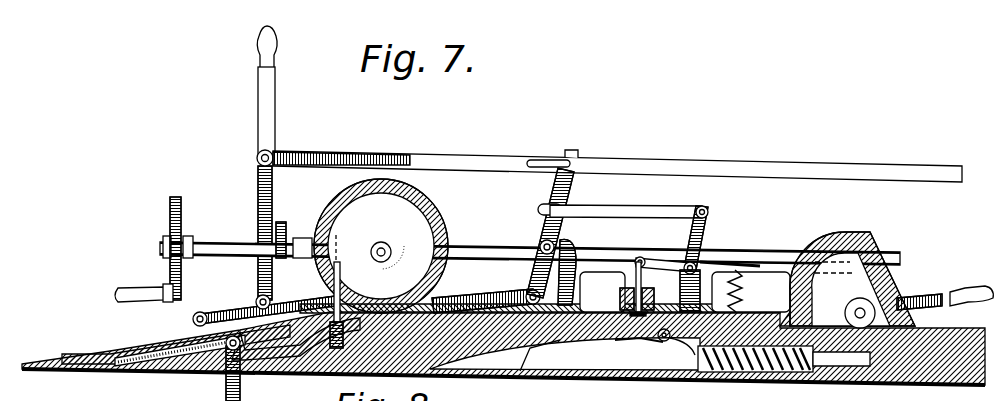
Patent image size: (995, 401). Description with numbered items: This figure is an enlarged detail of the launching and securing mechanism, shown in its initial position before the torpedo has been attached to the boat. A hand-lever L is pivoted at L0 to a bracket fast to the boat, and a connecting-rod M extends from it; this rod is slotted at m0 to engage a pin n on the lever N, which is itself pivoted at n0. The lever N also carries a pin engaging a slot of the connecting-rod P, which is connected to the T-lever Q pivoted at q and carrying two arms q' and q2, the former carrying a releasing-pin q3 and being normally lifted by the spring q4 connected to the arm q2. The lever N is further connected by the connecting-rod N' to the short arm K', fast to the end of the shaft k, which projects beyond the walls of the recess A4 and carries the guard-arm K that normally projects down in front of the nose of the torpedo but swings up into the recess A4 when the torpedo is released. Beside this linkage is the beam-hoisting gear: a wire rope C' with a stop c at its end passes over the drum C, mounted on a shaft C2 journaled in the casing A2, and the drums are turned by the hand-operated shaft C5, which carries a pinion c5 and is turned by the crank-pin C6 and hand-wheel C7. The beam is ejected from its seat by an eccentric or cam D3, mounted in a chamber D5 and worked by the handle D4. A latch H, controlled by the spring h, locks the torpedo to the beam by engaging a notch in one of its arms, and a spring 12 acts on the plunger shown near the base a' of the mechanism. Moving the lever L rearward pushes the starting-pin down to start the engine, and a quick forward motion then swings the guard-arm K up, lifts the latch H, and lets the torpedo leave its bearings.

The hand-lever L is at (275, 122).
The lever pivot L0 is at (256, 300).
The connecting-rod M is at (742, 165).
The slot m0 is at (538, 160).
The pin n is at (560, 165).
The lever N is at (571, 210).
The connecting-rod N' is at (415, 290).
The lever pivot n0 is at (570, 240).
The connecting-rod P is at (622, 218).
The T-lever Q is at (708, 232).
The pivot q is at (712, 268).
The arm q' is at (665, 245).
The arm q2 is at (752, 262).
The releasing-pin q3 is at (635, 266).
The spring q4 is at (744, 300).
The drum C is at (347, 231).
The wire rope C' is at (349, 305).
The shaft C2 is at (383, 243).
The shaft C5 is at (220, 232).
The pinion c5 is at (280, 222).
The crank-pin C6 is at (150, 272).
The hand-wheel C7 is at (172, 210).
The casing A2 is at (432, 208).
The recess A4 is at (160, 368).
The guard-arm K is at (251, 368).
The short arm K' is at (237, 315).
The shaft k is at (225, 352).
The stop c is at (322, 372).
The eccentric or cam D3 is at (860, 248).
The handle D4 is at (958, 292).
The chamber D5 is at (895, 294).
The latch H is at (668, 378).
The spring h is at (648, 360).
The base part a' is at (536, 370).
The spring 12 is at (762, 372).